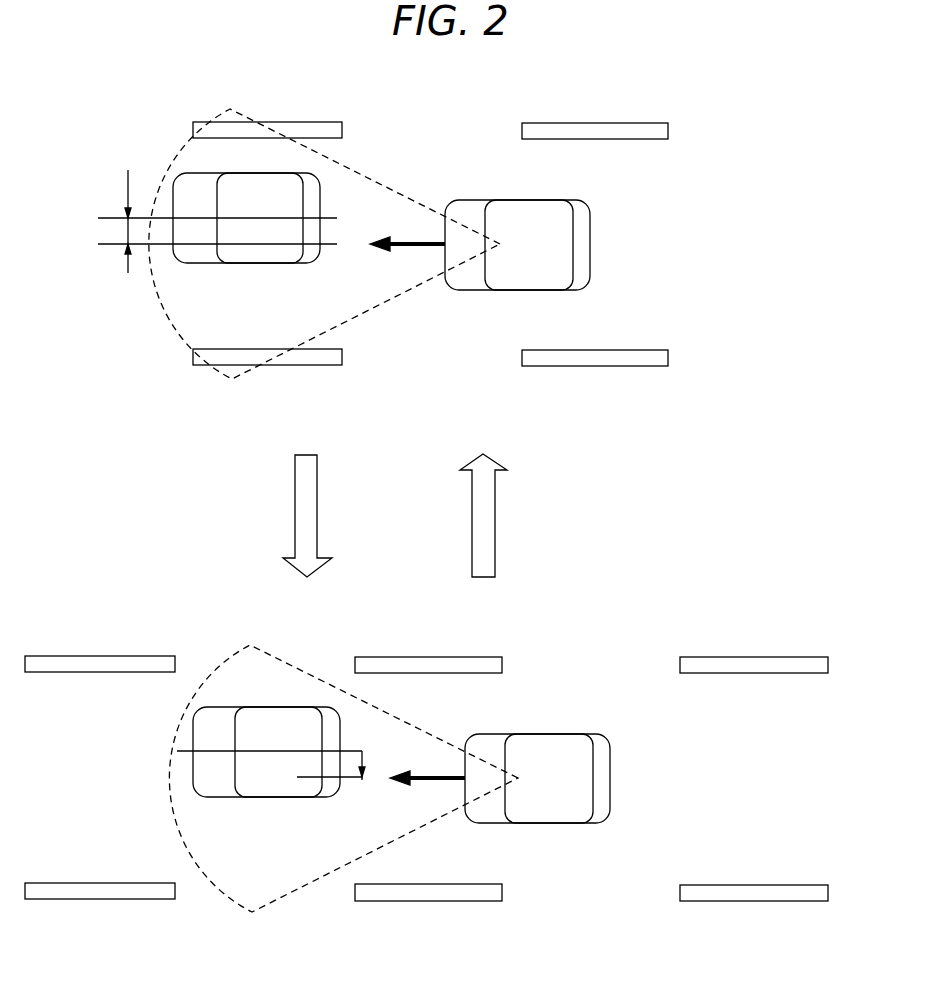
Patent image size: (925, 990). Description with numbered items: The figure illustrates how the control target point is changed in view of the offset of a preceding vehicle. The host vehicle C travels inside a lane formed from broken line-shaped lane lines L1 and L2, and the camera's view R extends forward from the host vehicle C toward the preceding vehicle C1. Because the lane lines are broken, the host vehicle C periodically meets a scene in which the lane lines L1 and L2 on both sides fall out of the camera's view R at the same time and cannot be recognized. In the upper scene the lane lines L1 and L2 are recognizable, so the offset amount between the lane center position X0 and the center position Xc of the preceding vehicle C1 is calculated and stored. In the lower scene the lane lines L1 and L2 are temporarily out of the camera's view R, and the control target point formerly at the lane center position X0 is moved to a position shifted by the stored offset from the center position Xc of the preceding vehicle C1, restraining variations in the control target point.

The host vehicle C is at (590, 245).
The preceding vehicle C1 is at (258, 263).
The camera's view R is at (387, 208).
The lane line L1 is at (617, 366).
The lane line L2 is at (608, 123).
The center position of the preceding vehicle Xc is at (213, 478).
The lane center position X0 is at (213, 504).